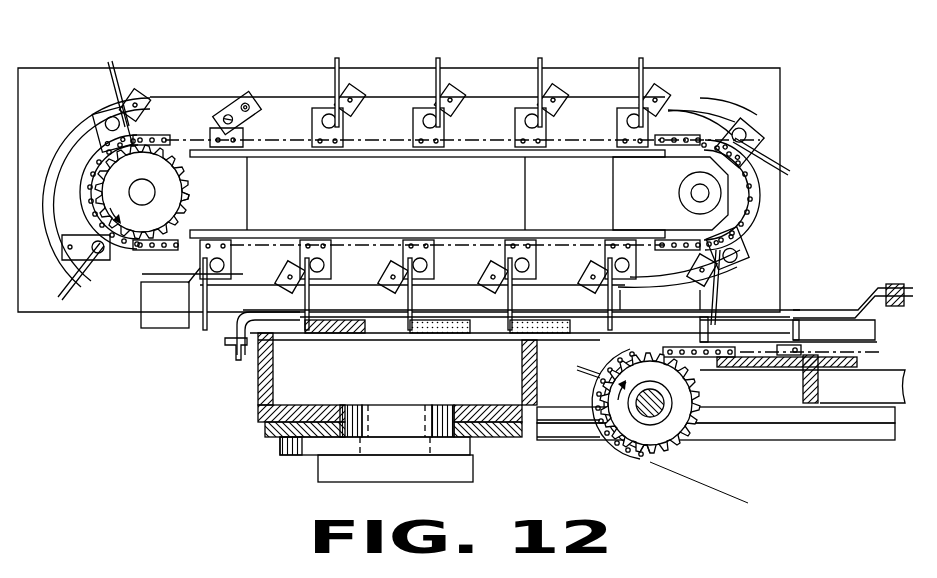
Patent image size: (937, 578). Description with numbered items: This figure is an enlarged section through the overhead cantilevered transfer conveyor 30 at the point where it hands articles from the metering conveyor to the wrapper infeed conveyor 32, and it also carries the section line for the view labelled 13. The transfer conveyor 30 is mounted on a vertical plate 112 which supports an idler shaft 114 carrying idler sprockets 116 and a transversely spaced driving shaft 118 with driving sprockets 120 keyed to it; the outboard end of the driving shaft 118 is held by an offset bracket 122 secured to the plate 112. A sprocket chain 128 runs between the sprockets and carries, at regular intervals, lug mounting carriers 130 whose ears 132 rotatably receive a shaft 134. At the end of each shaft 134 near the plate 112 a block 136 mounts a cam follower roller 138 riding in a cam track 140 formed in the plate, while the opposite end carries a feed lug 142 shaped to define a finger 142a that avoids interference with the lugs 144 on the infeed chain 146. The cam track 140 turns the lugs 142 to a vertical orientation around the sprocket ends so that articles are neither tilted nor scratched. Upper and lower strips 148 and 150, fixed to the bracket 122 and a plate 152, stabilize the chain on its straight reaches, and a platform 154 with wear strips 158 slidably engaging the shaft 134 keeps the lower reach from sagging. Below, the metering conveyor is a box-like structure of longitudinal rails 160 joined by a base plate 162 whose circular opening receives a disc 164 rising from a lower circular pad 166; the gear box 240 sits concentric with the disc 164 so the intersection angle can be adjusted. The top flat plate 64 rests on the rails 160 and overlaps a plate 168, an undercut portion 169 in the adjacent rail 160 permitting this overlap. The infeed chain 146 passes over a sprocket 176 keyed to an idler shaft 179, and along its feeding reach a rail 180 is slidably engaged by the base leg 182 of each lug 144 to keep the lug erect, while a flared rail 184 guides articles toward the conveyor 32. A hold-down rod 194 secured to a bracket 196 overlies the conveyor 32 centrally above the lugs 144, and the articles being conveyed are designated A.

The transfer conveyor 30 is at (752, 72).
The section line 13- 13 is at (48, 192).
The vertical plate 112 is at (146, 77).
The idler shaft 114 is at (163, 173).
The idler sprockets 116 is at (196, 152).
The driving shaft 118 is at (690, 190).
The driving sprockets 120 is at (672, 143).
The offset bracket 122 is at (662, 209).
The sprocket chain 128 is at (750, 198).
The lug mounting carriers 130 is at (758, 124).
The ears 132 is at (103, 118).
The shaft 134 is at (112, 112).
The block 136 is at (266, 95).
The cam follower roller 138 is at (235, 88).
The cam track 140 is at (130, 282).
The lug 142 is at (439, 63).
The finger 142a is at (512, 308).
The lugs 144 is at (578, 372).
The infeed chain 146 is at (603, 436).
The upper strips 148 is at (508, 158).
The lower strips 150 is at (510, 230).
The plate 152 is at (246, 222).
The platform 154 is at (263, 265).
The wear strips 158 is at (176, 270).
The longitudinal rails 160 is at (272, 383).
The base plate 162 is at (260, 413).
The disc 164 is at (412, 428).
The lower circular pad 166 is at (300, 455).
The plate 168 is at (868, 322).
The undercut portion 169 is at (522, 343).
The sprocket 176 is at (650, 462).
The idler shaft 179 is at (669, 382).
The rail 180 is at (832, 372).
The base leg 182 is at (782, 360).
The flared rail 184 is at (638, 325).
The hold-down rod 194 is at (236, 330).
The bracket 196 is at (230, 347).
The gear box 240 is at (323, 483).
The top flat plate 64 is at (285, 340).
The wrapper infeed conveyor 32 is at (614, 352).
The article A is at (545, 322).